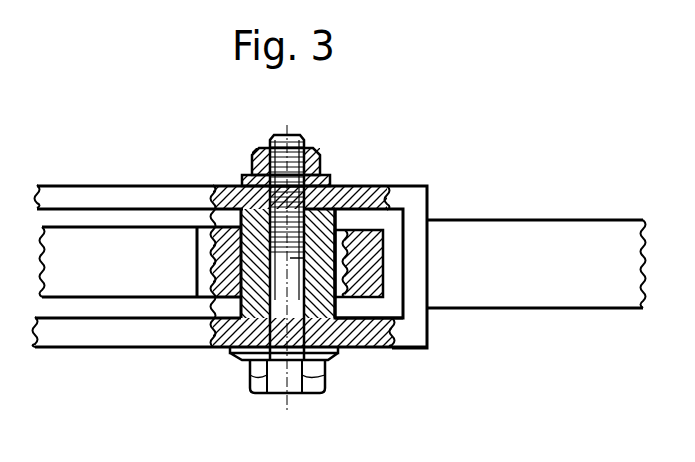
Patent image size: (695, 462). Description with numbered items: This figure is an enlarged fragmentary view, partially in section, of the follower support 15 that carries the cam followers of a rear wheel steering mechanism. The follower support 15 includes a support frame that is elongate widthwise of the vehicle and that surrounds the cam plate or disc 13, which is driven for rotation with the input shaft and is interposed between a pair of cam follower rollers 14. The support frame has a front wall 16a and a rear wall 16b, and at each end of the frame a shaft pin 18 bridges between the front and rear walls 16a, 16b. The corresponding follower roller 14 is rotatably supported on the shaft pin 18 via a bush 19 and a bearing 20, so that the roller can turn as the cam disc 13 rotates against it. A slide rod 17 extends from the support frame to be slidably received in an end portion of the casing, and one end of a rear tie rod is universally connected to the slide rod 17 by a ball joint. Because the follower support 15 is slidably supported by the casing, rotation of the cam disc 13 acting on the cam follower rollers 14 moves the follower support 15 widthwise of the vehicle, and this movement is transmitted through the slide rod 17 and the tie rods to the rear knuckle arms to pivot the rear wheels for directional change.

The cam plate or disc 13 is at (90, 283).
The cam follower roller 14 is at (383, 267).
The follower support 15 is at (181, 186).
The front wall 16a is at (72, 193).
The rear wall 16b is at (141, 348).
The slide rod 17 is at (552, 292).
The shaft pin 18 is at (280, 305).
The bush 19 is at (328, 302).
The bearing 20 is at (243, 232).